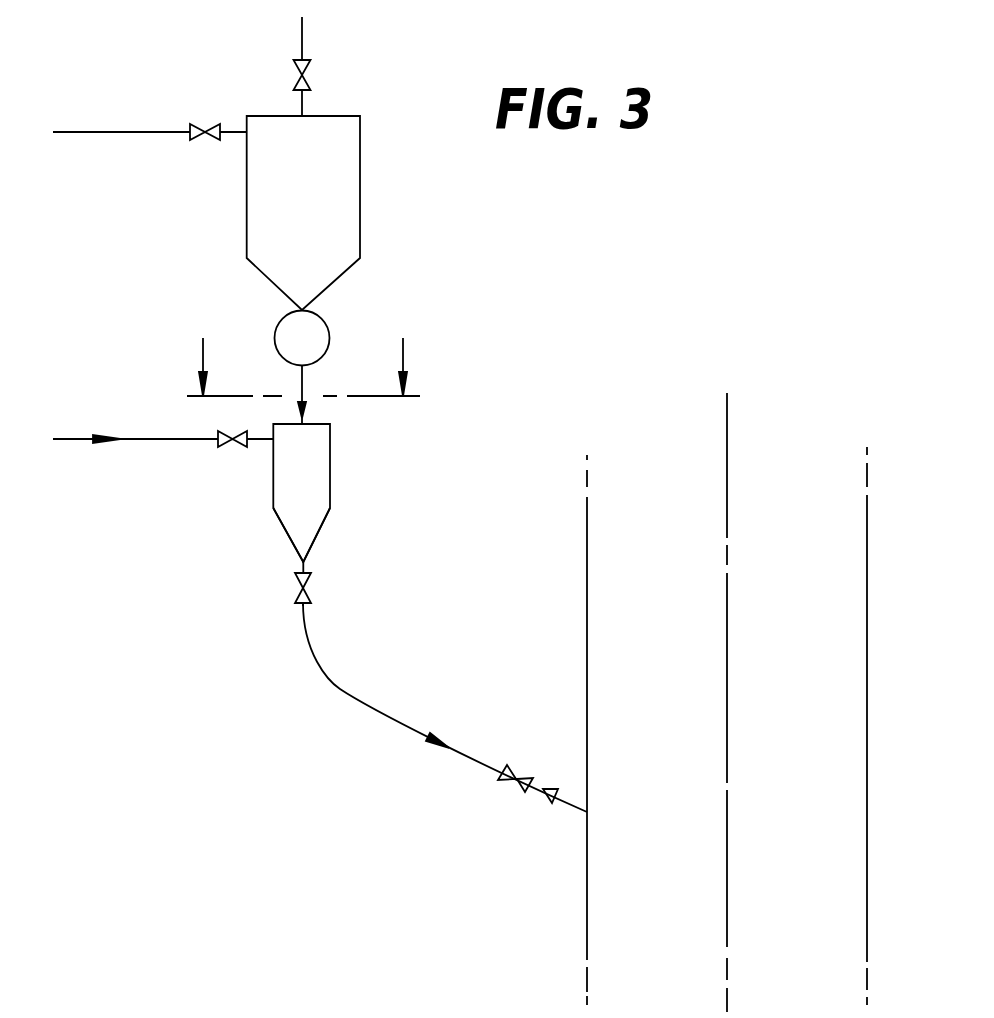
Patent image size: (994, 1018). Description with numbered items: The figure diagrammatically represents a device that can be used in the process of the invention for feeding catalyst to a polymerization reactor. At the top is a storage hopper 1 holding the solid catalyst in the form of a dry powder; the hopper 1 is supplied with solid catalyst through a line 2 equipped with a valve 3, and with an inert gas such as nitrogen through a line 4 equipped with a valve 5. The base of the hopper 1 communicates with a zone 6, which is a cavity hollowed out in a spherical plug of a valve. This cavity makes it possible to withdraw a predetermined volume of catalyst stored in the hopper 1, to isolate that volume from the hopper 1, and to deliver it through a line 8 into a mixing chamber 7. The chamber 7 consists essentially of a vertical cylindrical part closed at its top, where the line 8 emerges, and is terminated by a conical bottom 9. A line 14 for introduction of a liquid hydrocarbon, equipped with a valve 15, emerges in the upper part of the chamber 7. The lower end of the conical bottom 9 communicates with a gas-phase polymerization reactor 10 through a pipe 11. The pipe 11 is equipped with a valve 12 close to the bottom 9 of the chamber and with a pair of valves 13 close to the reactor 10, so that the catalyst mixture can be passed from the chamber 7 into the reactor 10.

The storage hopper 1 is at (360, 194).
The line 2 is at (302, 36).
The valve 3 is at (311, 71).
The line 4 is at (85, 133).
The valve 5 is at (201, 135).
The zone 6 is at (330, 337).
The mixing chamber 7 is at (331, 478).
The line 8 is at (302, 383).
The conical bottom 9 is at (312, 546).
The gas-phase polymerization reactor 10 is at (587, 591).
The pipe 11 is at (338, 688).
The valve 12 is at (295, 588).
The pair of valves 13 is at (524, 792).
The line 14 is at (129, 438).
The valve 15 is at (232, 446).